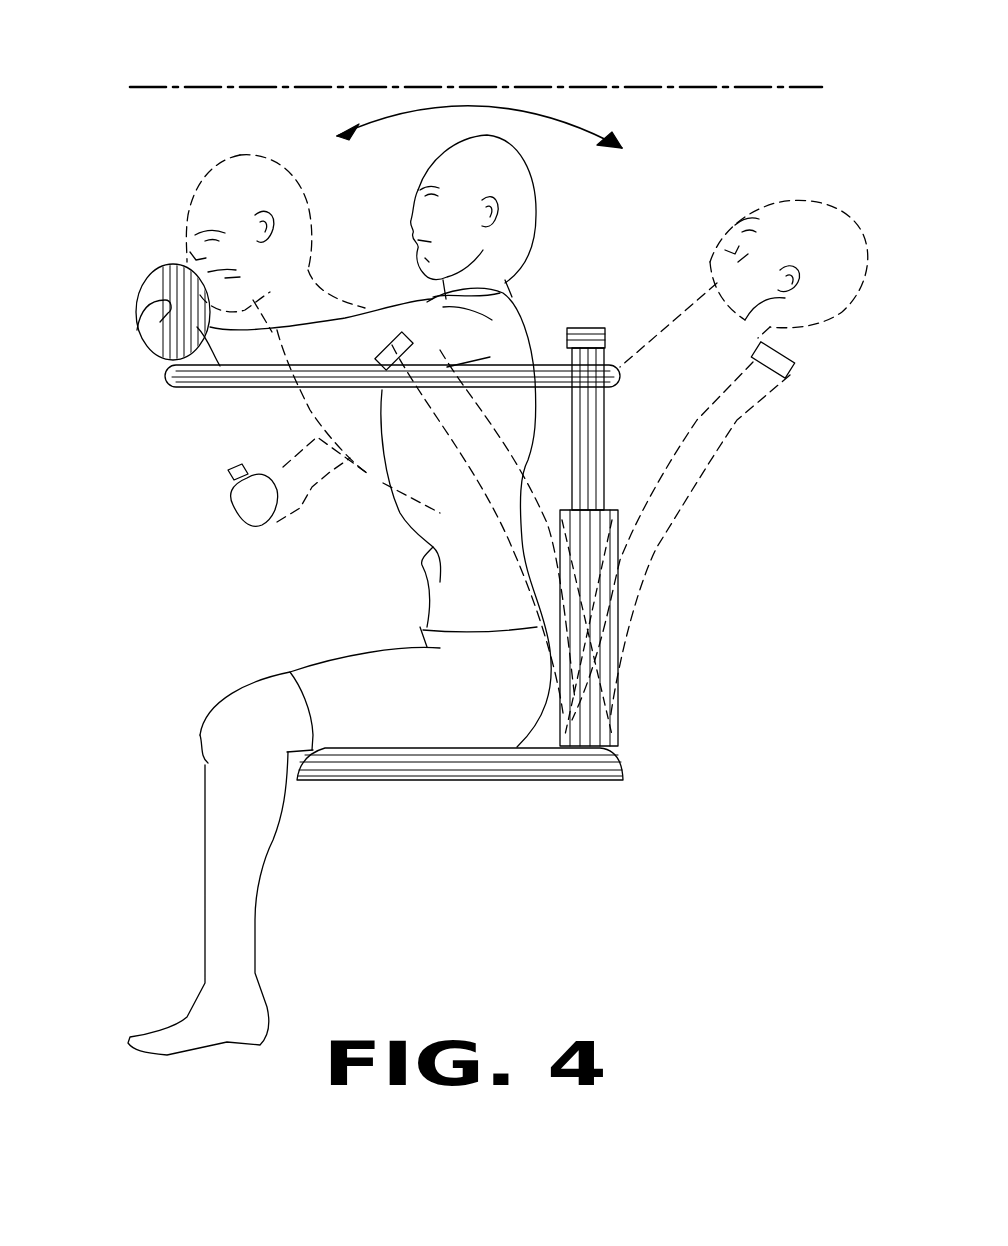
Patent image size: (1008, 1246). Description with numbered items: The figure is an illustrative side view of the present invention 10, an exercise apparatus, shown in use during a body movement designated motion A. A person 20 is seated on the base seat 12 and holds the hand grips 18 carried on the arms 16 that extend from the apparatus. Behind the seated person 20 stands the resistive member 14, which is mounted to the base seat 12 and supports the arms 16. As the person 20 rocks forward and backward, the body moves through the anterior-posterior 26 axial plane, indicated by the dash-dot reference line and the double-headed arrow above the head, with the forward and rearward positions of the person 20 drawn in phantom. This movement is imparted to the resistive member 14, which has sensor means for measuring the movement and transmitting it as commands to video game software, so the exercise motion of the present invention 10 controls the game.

The present invention 10 is at (458, 564).
The base seat 12 is at (460, 808).
The resistive member 14 is at (622, 718).
The arms 16 is at (207, 388).
The hand grips 18 is at (150, 330).
The person 20 is at (528, 202).
The anterior-posterior axial plane 26 is at (478, 87).